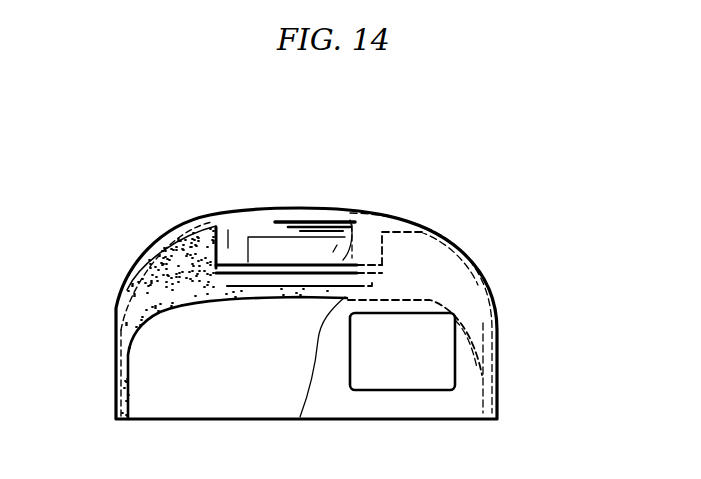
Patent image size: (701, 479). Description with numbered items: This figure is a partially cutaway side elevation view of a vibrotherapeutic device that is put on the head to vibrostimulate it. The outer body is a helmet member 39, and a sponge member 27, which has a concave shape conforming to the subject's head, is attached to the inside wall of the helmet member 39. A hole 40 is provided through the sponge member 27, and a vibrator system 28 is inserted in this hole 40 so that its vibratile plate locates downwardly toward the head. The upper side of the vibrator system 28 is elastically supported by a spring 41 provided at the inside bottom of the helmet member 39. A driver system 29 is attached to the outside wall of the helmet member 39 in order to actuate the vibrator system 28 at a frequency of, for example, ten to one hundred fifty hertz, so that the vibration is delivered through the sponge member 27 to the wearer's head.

The sponge member 27 is at (123, 333).
The vibrator system 28 is at (346, 207).
The driver system 29 is at (453, 383).
The helmet member 39 is at (199, 216).
The hole 40 is at (231, 207).
The spring 41 is at (284, 207).